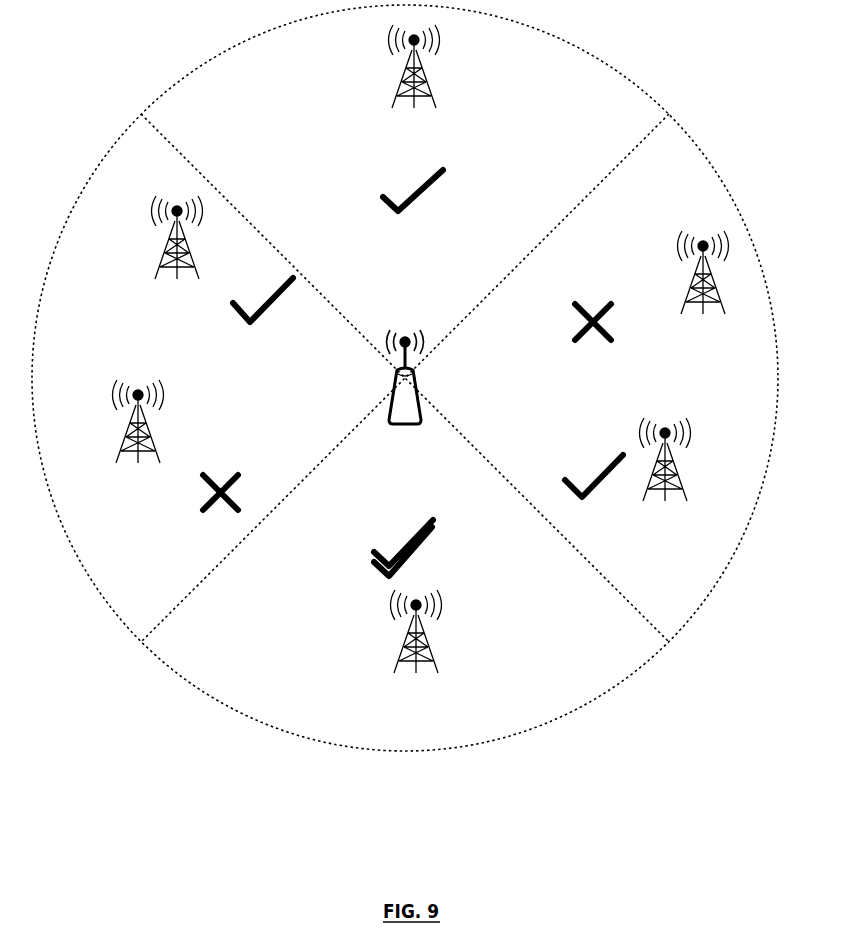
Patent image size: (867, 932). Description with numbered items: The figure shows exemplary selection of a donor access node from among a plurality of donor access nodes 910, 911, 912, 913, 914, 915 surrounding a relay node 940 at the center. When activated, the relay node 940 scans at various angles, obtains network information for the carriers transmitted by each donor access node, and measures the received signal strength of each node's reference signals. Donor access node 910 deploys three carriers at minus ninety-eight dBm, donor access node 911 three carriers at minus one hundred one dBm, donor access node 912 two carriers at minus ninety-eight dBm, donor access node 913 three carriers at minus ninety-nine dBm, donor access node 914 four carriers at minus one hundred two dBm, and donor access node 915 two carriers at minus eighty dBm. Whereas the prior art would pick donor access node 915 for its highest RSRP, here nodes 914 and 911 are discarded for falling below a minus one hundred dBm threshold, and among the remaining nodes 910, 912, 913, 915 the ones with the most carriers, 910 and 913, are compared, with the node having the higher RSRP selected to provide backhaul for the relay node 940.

The donor access node 910 is at (403, 656).
The donor access node 911 is at (127, 444).
The donor access node 912 is at (164, 259).
The donor access node 913 is at (402, 89).
The donor access node 914 is at (715, 293).
The donor access node 915 is at (680, 488).
The relay node 940 is at (425, 409).